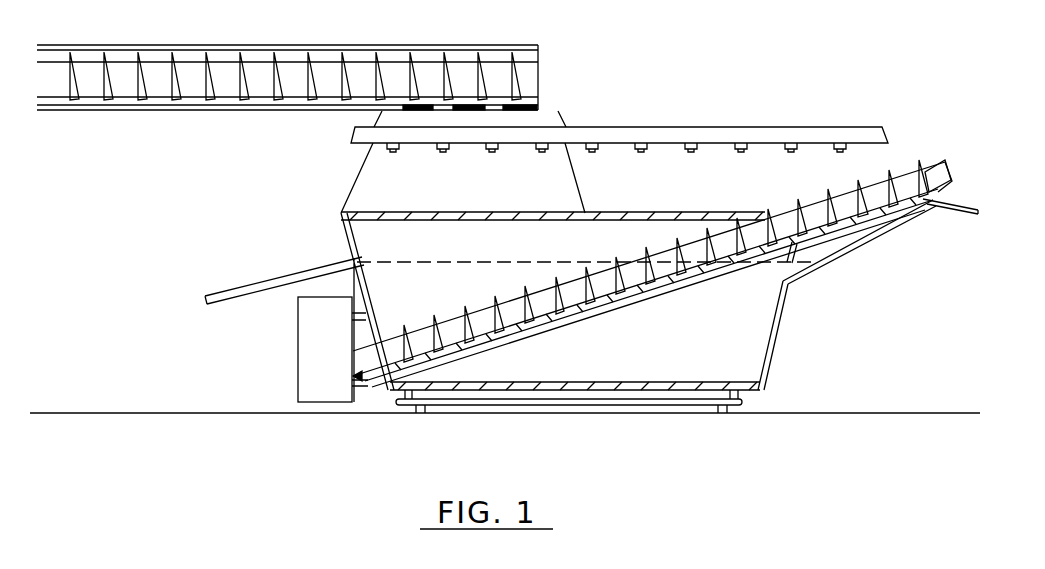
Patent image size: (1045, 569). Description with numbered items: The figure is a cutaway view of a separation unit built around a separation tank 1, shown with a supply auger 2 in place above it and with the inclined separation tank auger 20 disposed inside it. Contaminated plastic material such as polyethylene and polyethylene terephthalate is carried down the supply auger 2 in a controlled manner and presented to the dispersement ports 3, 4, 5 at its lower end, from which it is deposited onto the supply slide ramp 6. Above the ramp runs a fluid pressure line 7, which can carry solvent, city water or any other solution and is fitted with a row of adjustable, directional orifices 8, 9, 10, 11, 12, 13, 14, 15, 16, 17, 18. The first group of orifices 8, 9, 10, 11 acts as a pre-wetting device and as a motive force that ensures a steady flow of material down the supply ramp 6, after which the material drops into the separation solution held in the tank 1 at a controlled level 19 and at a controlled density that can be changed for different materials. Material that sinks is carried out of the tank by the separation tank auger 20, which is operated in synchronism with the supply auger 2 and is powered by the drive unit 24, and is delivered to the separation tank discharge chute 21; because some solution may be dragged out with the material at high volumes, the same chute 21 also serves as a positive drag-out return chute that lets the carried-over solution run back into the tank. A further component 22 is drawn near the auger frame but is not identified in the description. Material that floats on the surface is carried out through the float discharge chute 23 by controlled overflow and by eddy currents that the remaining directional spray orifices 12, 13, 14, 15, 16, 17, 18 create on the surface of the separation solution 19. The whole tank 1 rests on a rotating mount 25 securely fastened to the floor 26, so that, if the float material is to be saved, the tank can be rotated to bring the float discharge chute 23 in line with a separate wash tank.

The separation tank 1 is at (725, 350).
The supply auger 2 is at (286, 58).
The dispersement port 3 is at (430, 114).
The dispersement port 4 is at (471, 115).
The dispersement port 5 is at (538, 112).
The supply slide ramp 6 is at (388, 196).
The fluid pressure line 7 is at (739, 128).
The adjustable directional orifice 8 is at (395, 152).
The adjustable directional orifice 9 is at (445, 152).
The adjustable directional orifice 10 is at (494, 152).
The adjustable directional orifice 11 is at (544, 152).
The directional spray orifice 12 is at (594, 152).
The directional spray orifice 13 is at (643, 152).
The directional spray orifice 14 is at (693, 152).
The directional spray orifice 15 is at (743, 152).
The directional spray orifice 16 is at (793, 152).
The directional spray orifice 17 is at (842, 152).
The directional spray orifice 18 is at (890, 161).
The controlled level of separation solution 19 is at (471, 260).
The separation tank auger 20 is at (933, 163).
The separation tank discharge chute 21 is at (945, 213).
The conveyor frame 22 is at (843, 268).
The float discharge chute 23 is at (320, 260).
The drive unit 24 is at (295, 358).
The rotating mount 25 is at (750, 405).
The floor 26 is at (246, 410).